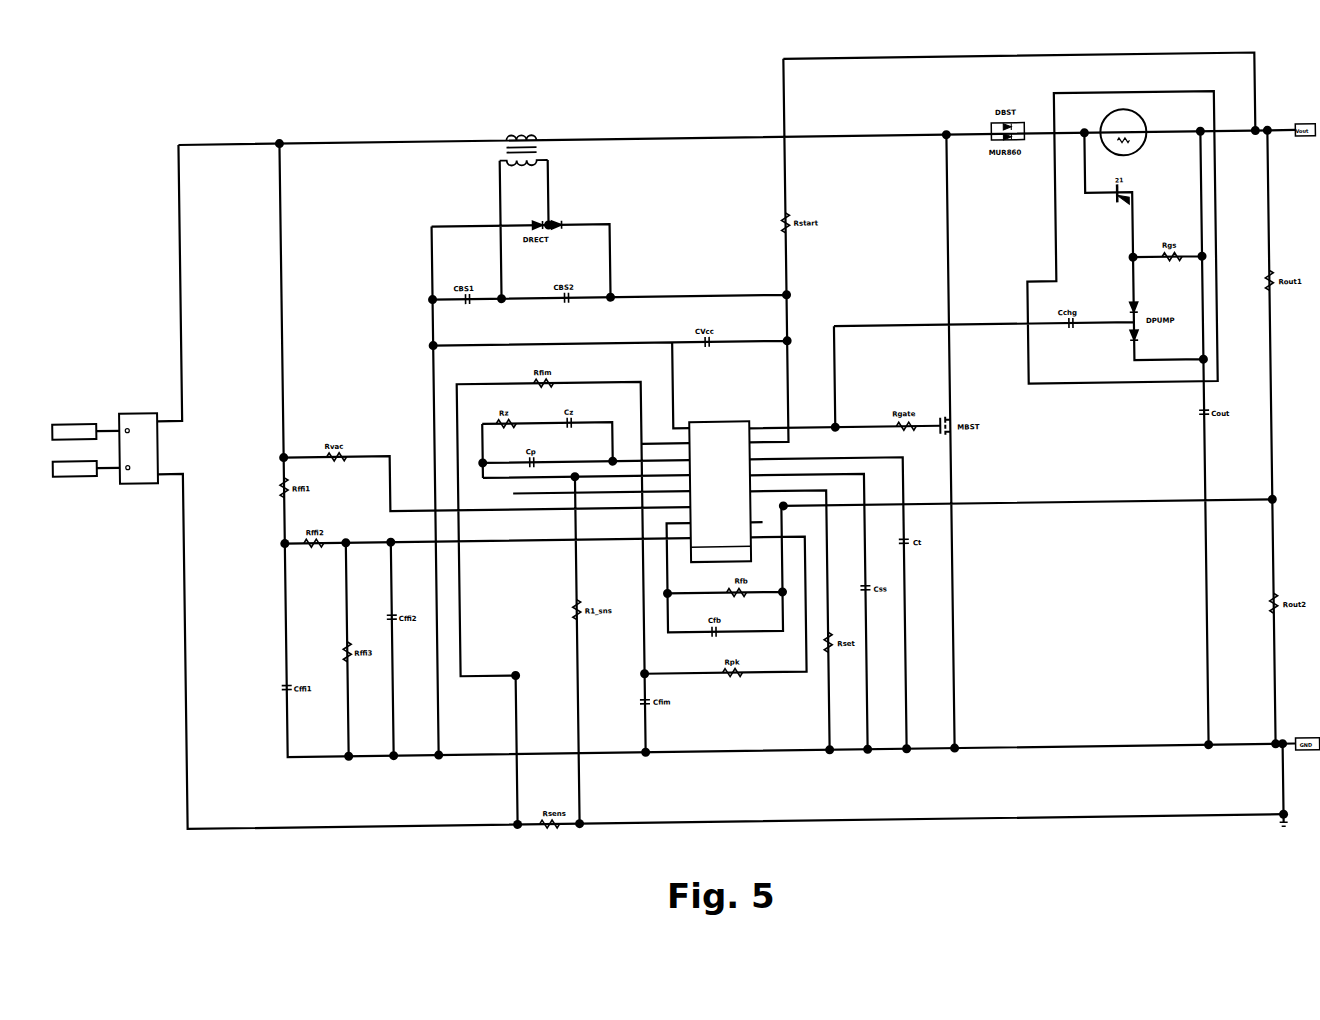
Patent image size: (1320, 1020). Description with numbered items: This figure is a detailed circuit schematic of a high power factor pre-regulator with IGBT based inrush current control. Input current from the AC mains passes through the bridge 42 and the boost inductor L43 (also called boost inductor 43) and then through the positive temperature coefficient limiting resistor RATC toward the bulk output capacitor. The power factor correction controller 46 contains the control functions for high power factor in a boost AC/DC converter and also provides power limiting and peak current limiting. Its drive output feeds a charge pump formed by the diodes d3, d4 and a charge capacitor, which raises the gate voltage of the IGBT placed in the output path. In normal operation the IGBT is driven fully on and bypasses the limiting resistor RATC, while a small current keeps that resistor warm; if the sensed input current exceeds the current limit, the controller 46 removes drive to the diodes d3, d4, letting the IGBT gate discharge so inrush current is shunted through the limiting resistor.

The bridge 42 is at (137, 487).
The boost inductor L43 is at (514, 112).
The boost inductor 43 is at (488, 128).
The UPFC 46 is at (742, 412).
The PTC thermistor RATC is at (1150, 146).
The charge pump diode d3 is at (1141, 308).
The charge pump diode d4 is at (1143, 341).